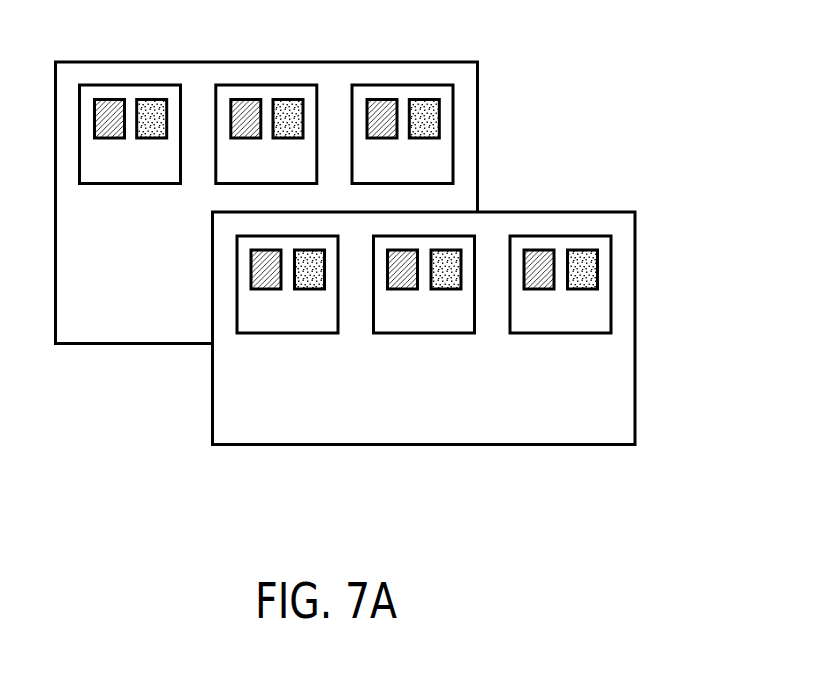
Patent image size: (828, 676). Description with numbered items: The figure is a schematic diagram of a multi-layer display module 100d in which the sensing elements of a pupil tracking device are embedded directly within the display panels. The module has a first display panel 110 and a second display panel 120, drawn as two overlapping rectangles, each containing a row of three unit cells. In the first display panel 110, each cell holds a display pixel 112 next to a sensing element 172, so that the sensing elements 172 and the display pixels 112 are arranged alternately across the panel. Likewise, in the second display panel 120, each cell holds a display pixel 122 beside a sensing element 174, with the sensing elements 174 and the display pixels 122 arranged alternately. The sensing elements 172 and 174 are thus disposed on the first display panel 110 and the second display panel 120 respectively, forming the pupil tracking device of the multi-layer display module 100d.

The multi-layer display module 100d is at (693, 526).
The first display panel 110 is at (140, 345).
The display pixels 112 is at (383, 110).
The sensing elements 172 is at (421, 110).
The second display panel 120 is at (300, 446).
The display pixels 122 is at (539, 260).
The sensing elements 174 is at (580, 260).